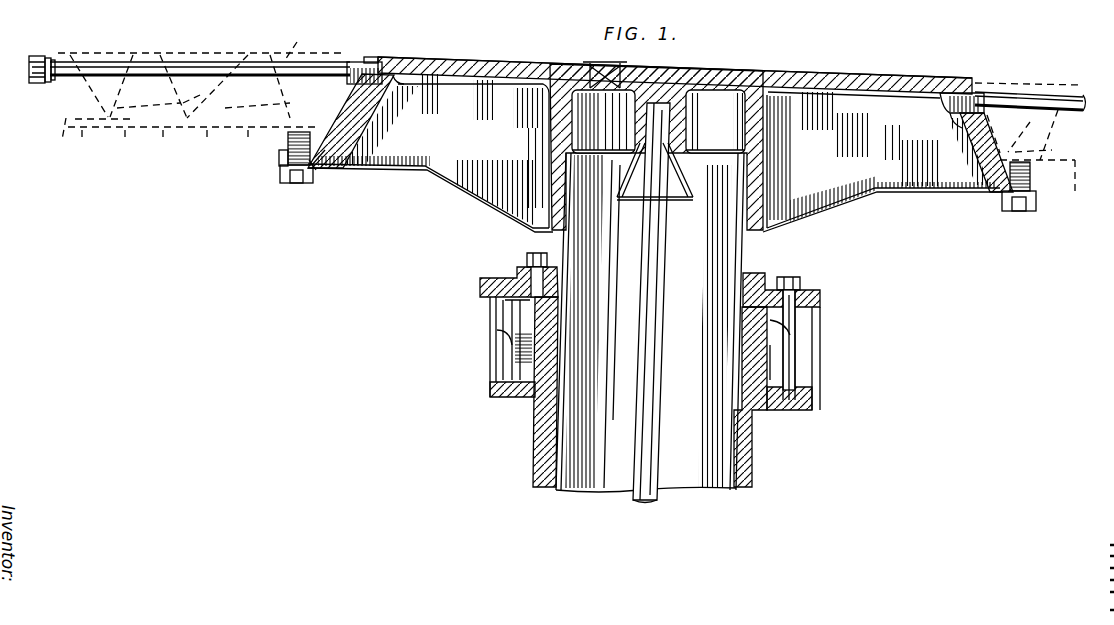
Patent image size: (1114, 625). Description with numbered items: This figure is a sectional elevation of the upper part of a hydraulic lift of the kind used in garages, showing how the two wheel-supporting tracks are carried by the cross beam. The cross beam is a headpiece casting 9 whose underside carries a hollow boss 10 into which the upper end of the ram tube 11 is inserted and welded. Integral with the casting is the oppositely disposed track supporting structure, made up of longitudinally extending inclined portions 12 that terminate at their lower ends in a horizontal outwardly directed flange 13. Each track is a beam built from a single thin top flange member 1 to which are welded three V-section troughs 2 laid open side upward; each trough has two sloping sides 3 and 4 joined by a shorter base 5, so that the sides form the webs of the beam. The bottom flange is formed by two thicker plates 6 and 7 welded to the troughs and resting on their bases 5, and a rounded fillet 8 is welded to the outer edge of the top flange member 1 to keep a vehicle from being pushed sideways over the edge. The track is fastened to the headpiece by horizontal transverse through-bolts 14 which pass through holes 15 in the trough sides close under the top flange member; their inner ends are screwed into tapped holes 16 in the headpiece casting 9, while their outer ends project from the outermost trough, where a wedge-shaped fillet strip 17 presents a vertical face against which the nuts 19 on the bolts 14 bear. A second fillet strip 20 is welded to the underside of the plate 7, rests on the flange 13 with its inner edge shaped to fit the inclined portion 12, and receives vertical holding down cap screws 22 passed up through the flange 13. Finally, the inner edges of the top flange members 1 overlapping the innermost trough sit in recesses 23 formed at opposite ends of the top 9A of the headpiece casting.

The top flange member 1 is at (293, 55).
The V-section trough 2 is at (591, 127).
The sloping side 3 is at (335, 92).
The sloping side 4 is at (562, 92).
The base 5 is at (555, 120).
The plate 6 is at (194, 139).
The plate 7 is at (659, 166).
The rounded fillet 8 is at (38, 44).
The headpiece casting 9 is at (712, 45).
The top of the headpiece casting 9A is at (467, 64).
The hollow boss 10 is at (766, 161).
The ram tube 11 is at (560, 243).
The inclined portion 12 is at (338, 132).
The horizontal outwardly directed flange 13 is at (281, 166).
The bolt 14 is at (97, 68).
The hole 15 is at (166, 56).
The tapped hole 16 is at (392, 78).
The wedge-shaped fillet strip 17 is at (52, 84).
The nut 19 is at (38, 84).
The second fillet strip 20 is at (318, 148).
The holding down cap screw 22 is at (309, 160).
The recess 23 is at (362, 64).